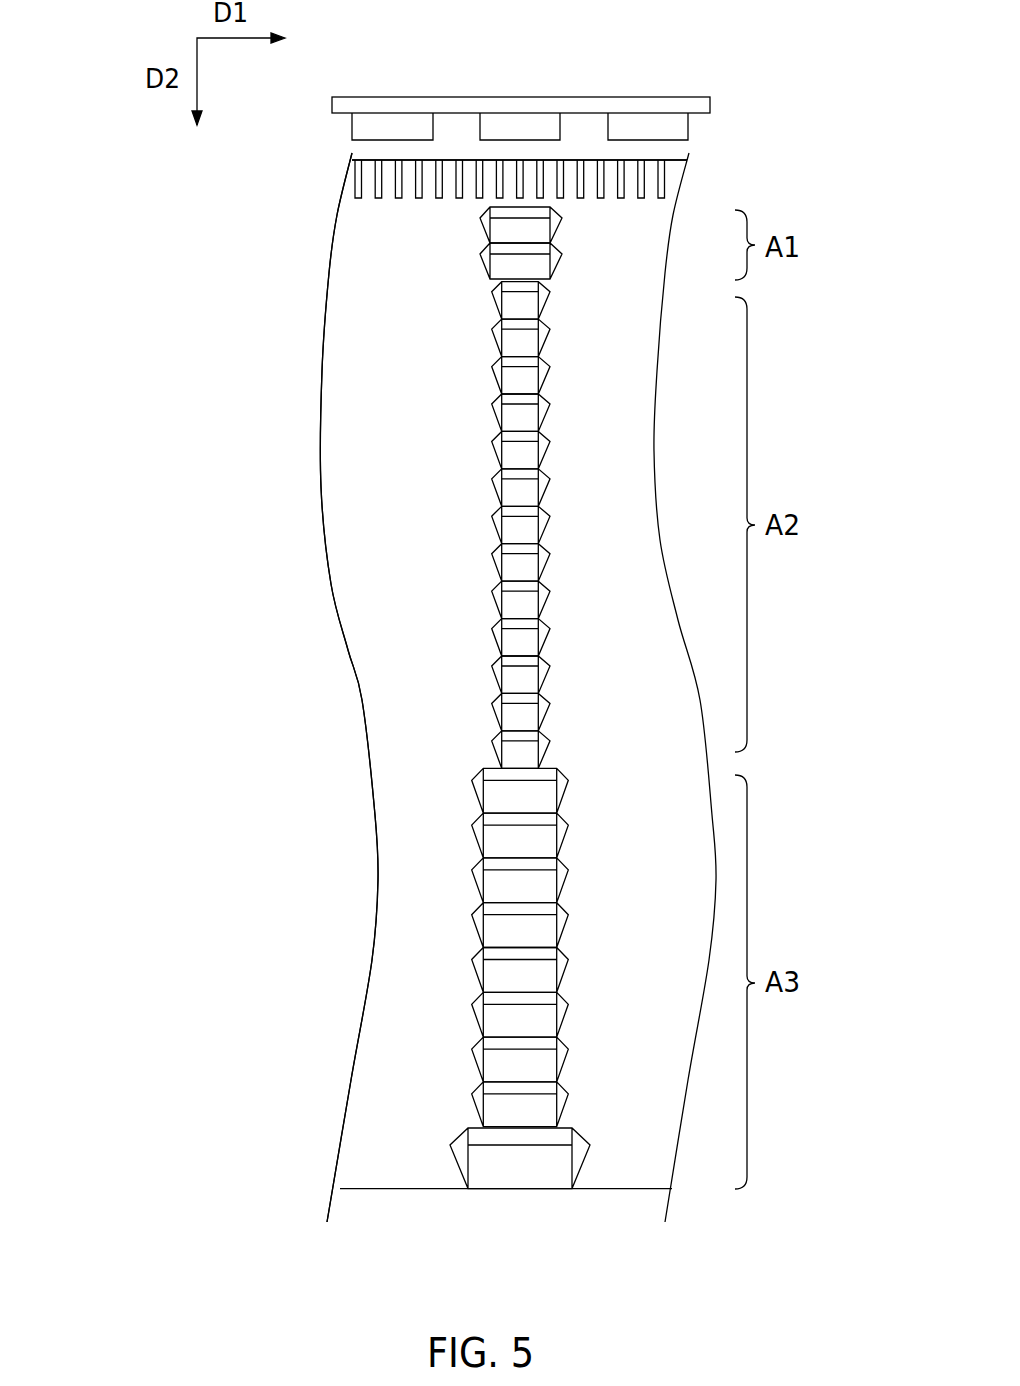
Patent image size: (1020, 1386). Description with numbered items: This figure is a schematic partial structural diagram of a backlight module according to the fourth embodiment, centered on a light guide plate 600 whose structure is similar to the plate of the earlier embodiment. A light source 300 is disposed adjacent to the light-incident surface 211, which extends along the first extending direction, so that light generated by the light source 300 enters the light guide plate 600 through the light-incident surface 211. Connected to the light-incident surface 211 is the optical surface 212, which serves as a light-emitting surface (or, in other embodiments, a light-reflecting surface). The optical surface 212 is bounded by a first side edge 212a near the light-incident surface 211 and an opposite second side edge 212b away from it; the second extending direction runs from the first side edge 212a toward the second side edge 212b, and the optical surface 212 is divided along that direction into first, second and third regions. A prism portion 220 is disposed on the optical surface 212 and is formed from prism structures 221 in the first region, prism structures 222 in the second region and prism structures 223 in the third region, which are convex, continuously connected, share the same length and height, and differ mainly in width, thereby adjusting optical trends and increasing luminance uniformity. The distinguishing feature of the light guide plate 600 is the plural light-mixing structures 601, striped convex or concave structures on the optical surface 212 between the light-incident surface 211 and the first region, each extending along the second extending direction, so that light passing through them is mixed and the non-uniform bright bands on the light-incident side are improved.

The light source 300 is at (650, 123).
The light-incident surface 211 is at (574, 152).
The light-mixing structures 601 is at (662, 180).
The first side edge 212a is at (410, 160).
The light guide plate 600 is at (314, 233).
The optical surface 212 is at (358, 287).
The second side edge 212b is at (616, 1190).
The prism portions 220 is at (365, 698).
The prism structures 221 is at (505, 269).
The prism structures 222 is at (513, 347).
The prism structures 223 is at (409, 948).